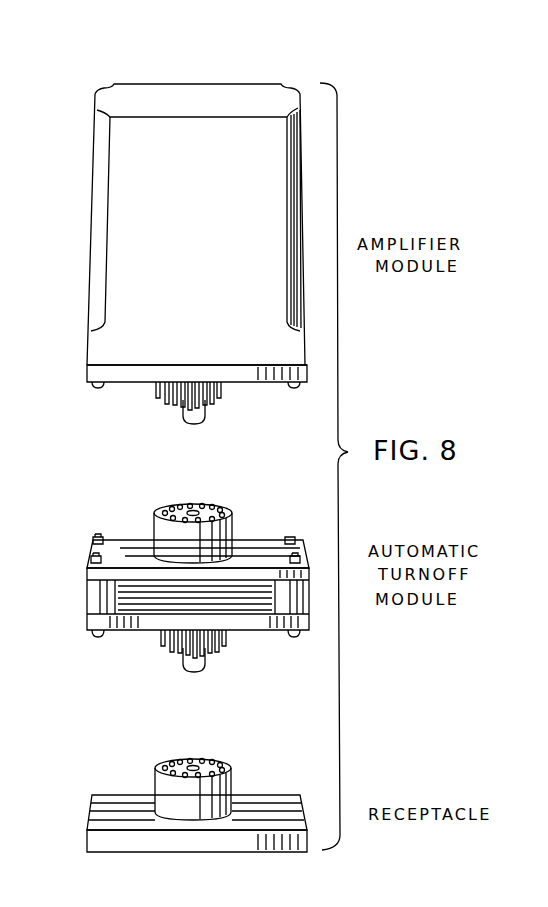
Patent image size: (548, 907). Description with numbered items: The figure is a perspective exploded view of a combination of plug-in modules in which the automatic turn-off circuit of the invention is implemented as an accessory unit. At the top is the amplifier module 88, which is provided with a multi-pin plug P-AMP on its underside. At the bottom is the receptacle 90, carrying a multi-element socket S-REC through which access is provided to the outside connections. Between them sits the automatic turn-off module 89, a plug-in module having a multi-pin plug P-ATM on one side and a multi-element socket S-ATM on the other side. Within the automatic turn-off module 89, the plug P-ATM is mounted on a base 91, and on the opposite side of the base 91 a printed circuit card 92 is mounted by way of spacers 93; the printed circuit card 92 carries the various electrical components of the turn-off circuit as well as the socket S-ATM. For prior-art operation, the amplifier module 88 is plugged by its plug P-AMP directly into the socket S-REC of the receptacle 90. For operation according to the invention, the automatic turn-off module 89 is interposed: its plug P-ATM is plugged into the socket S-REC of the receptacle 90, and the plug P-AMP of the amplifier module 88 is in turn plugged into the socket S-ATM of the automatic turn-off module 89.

The amplifier module 88 is at (86, 350).
The automatic turn-off module 89 is at (86, 592).
The receptacle 90 is at (86, 816).
The base 91 is at (306, 625).
The printed circuit card 92 is at (298, 560).
The spacers 93 is at (302, 600).
The multi-pin plug of amplifier module P-AMP is at (214, 405).
The multi-element socket of automatic turn-off module S-ATM is at (233, 509).
The multi-pin plug of automatic turn-off module P-ATM is at (215, 656).
The multi-element socket of receptacle S-REC is at (236, 778).